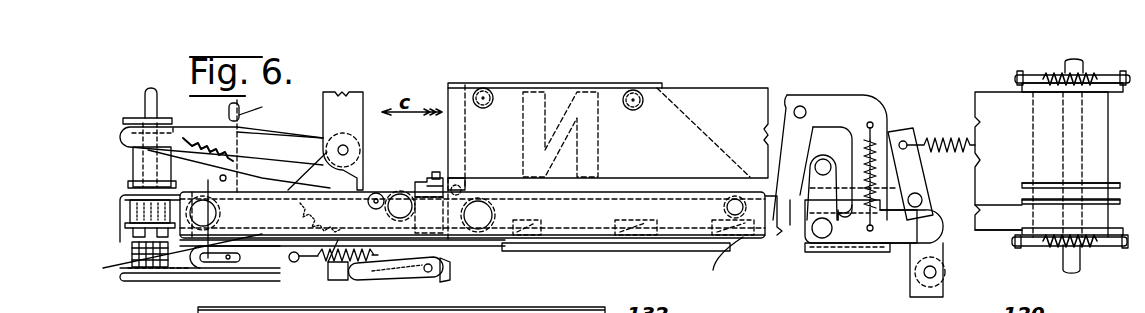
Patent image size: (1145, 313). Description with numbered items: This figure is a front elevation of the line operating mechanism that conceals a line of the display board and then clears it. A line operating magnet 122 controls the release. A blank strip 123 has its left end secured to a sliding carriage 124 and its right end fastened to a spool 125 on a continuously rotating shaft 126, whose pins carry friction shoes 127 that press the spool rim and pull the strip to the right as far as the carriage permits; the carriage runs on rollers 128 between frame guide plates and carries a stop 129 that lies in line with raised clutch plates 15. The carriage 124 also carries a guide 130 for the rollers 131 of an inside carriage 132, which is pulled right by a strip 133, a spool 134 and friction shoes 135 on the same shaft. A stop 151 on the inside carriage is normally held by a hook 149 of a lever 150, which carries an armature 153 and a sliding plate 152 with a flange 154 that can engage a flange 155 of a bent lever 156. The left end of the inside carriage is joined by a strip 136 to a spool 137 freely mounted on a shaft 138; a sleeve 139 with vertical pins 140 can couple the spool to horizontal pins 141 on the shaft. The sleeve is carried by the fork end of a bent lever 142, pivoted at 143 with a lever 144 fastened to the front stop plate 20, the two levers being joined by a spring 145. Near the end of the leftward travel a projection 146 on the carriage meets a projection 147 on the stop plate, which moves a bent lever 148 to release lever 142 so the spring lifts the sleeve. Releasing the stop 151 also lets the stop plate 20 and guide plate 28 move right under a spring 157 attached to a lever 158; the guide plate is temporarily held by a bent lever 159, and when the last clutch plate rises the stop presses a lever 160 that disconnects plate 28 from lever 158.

The clutch plates 15 is at (743, 242).
The front stop plate 20 is at (905, 182).
The guide plate 28 is at (828, 250).
The line operating magnet 122 is at (164, 255).
The blank strip 123 is at (979, 120).
The sliding carriage 124 is at (596, 64).
The spool 125 is at (1030, 183).
The shaft 126 is at (1076, 268).
The friction shoes 127 is at (1049, 74).
The rollers 128 is at (741, 188).
The stop 129 is at (460, 187).
The guide 130 is at (456, 210).
The rollers 131 is at (239, 170).
The inside carriage 132 is at (519, 205).
The strip 133 is at (1008, 224).
The spool 134 is at (1022, 201).
The friction shoes 135 is at (1050, 248).
The strip 136 is at (130, 213).
The spool 137 is at (122, 197).
The shaft 138 is at (145, 100).
The sleeve 139 is at (113, 157).
The vertical pins 140 is at (130, 183).
The horizontal pins 141 is at (128, 234).
The bent lever 142 is at (280, 145).
The pivot 143 is at (345, 141).
The lever 144 is at (319, 172).
The spring 145 is at (328, 232).
The projection 146 is at (442, 172).
The projection 147 is at (427, 180).
The bent lever 148 is at (372, 270).
The hook 149 is at (468, 246).
The lever 150 is at (210, 260).
The stop 151 is at (441, 260).
The plate 152 is at (240, 283).
The armature 153 is at (140, 279).
The flange 154 is at (330, 277).
The flange 155 is at (340, 277).
The bent lever 156 is at (270, 106).
The spring 157 is at (966, 140).
The lever 158 is at (901, 141).
The bent lever 159 is at (896, 234).
The lever 160 is at (830, 165).